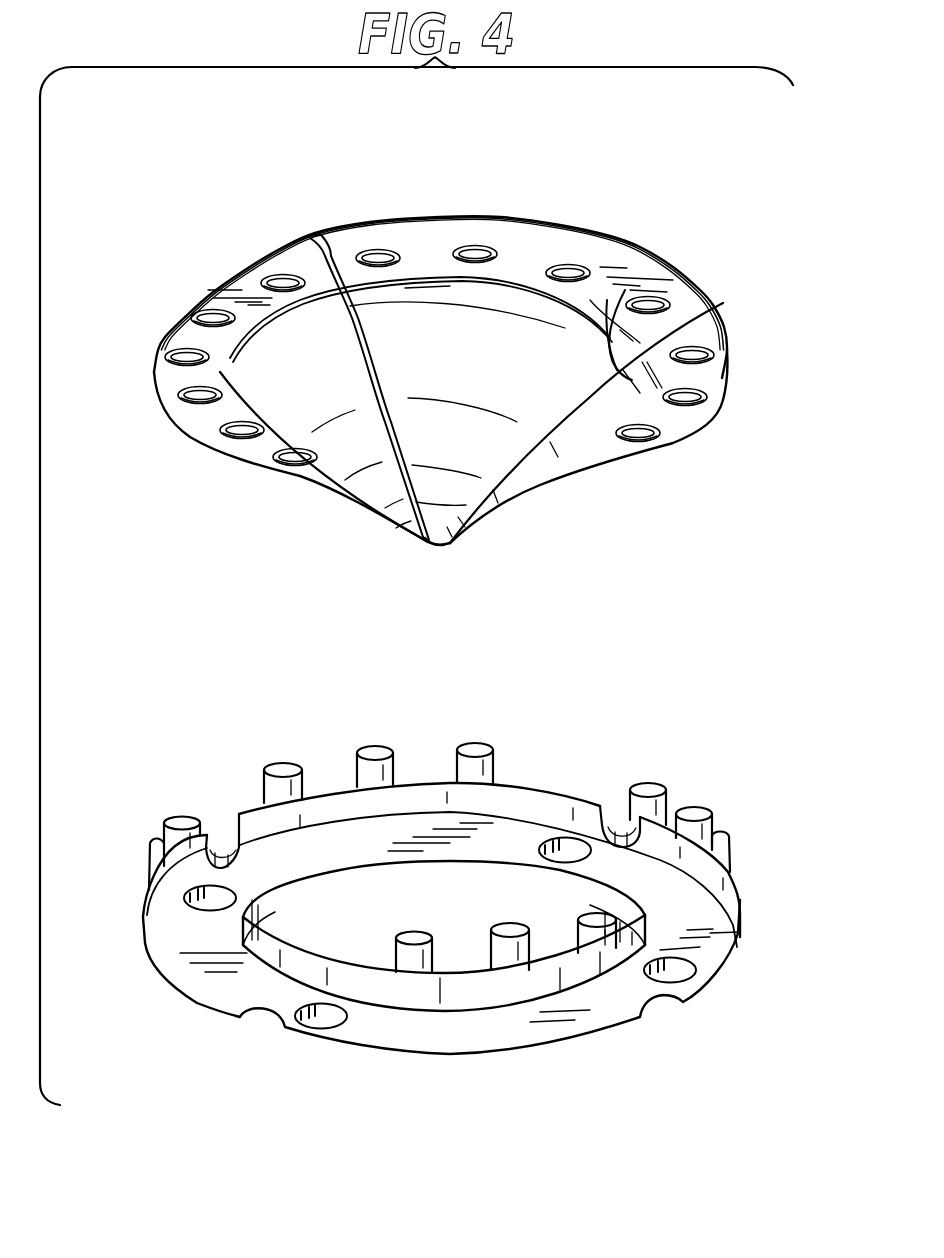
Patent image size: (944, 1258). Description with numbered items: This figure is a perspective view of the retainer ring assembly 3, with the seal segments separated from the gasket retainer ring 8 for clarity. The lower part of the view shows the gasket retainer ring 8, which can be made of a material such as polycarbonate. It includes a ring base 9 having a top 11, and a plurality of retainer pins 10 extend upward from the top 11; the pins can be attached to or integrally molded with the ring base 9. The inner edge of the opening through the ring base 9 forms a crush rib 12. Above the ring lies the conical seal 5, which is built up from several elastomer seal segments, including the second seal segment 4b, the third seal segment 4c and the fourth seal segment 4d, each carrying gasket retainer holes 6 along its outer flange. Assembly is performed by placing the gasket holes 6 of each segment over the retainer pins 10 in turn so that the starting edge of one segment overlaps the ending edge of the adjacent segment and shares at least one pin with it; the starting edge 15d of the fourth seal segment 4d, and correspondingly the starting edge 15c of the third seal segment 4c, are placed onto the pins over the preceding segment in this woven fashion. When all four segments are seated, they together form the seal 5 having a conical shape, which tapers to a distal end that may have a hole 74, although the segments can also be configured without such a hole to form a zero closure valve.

The retainer ring assembly 3 is at (161, 1022).
The second seal segment 4b is at (643, 380).
The third seal segment 4c is at (535, 305).
The fourth seal segment 4d is at (318, 436).
The conical seal 5 is at (780, 270).
The gasket retainer holes 6 is at (478, 250).
The gasket retainer ring 8 is at (731, 1002).
The ring base 9 is at (738, 882).
The retainer pins 10 is at (698, 813).
The top 11 is at (249, 814).
The crush rib 12 is at (390, 990).
The slit 15c is at (625, 290).
The starting edge 15d is at (342, 276).
The hole 74 is at (433, 548).